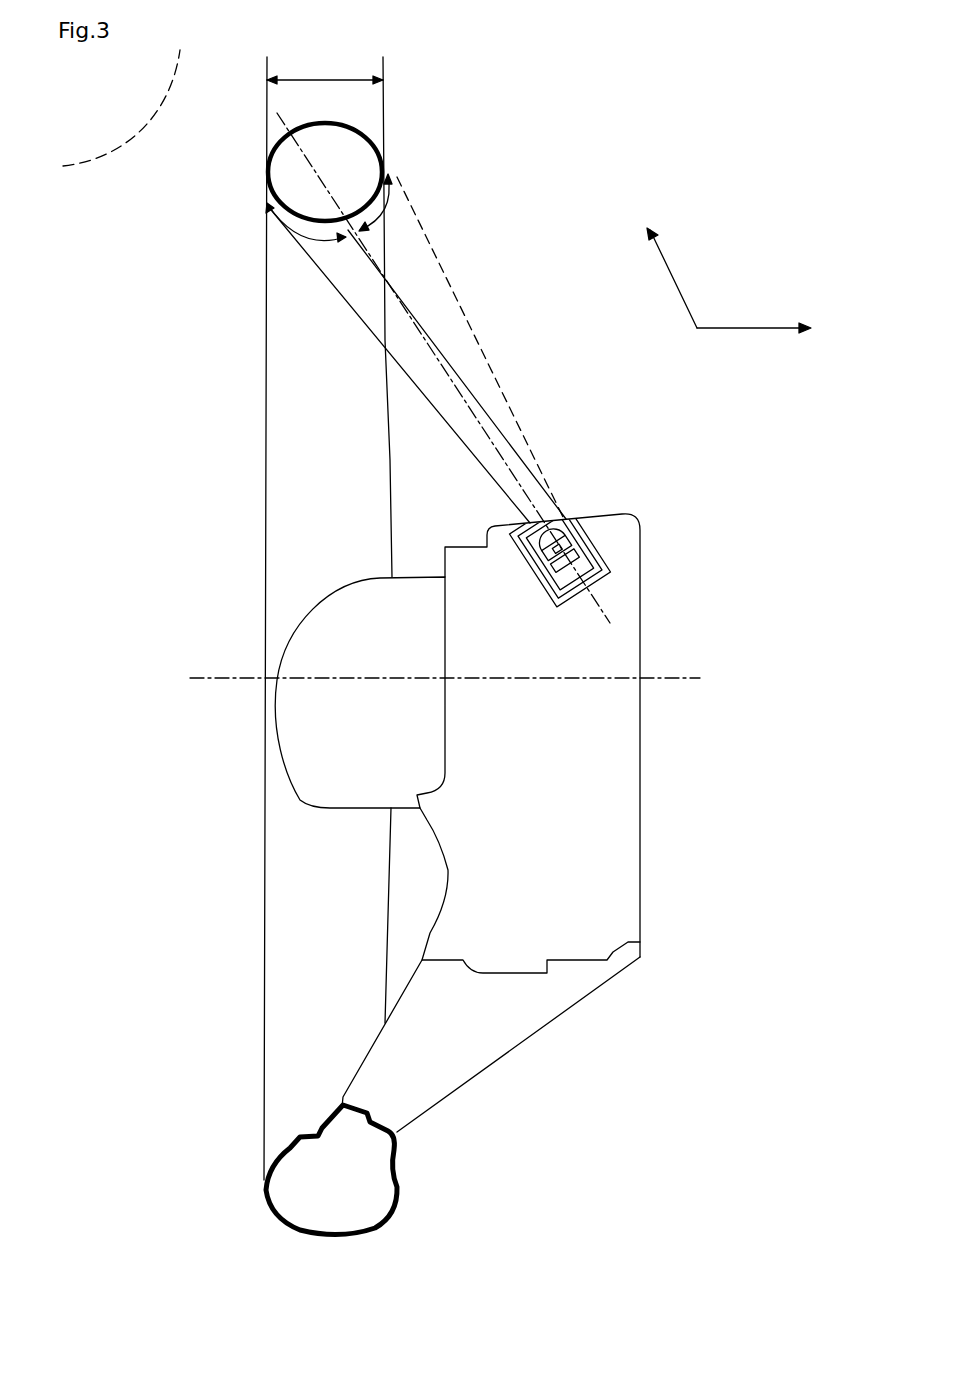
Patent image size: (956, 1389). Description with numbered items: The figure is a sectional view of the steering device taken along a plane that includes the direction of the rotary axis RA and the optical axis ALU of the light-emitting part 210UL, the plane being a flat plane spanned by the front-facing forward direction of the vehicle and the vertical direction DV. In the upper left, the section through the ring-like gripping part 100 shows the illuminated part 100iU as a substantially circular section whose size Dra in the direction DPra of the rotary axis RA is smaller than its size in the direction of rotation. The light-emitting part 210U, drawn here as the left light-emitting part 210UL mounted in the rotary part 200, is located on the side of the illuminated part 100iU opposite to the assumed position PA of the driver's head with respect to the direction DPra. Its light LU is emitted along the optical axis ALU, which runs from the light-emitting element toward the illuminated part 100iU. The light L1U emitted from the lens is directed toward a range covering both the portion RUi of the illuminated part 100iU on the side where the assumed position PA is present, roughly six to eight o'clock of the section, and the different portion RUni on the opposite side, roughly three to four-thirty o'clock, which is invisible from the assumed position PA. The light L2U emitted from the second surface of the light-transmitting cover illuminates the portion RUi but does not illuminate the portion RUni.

The gripping part 100 is at (280, 502).
The illuminated part 100iU is at (383, 160).
The rotary part 200 is at (508, 975).
The light-emitting part 210U is at (624, 543).
The light-emitting part 210UL is at (578, 508).
The optical axis ALU is at (600, 601).
The light L1U is at (445, 263).
The light L2U is at (508, 440).
The light LU is at (438, 350).
The rotary axis RA is at (663, 677).
The assumed position PA is at (138, 137).
The size Dra is at (325, 70).
The portion RUi is at (290, 228).
The different portion RUni is at (400, 194).
The vertical direction DV is at (667, 278).
The direction of the rotary axis DPra is at (754, 340).